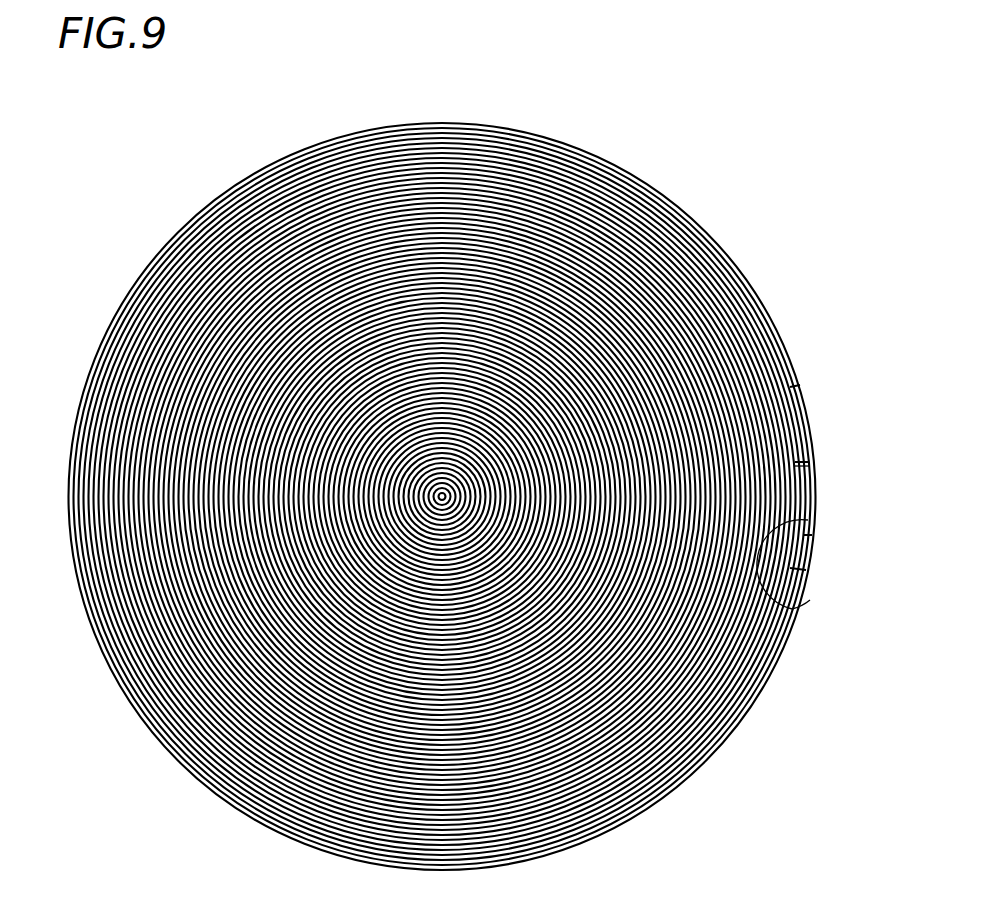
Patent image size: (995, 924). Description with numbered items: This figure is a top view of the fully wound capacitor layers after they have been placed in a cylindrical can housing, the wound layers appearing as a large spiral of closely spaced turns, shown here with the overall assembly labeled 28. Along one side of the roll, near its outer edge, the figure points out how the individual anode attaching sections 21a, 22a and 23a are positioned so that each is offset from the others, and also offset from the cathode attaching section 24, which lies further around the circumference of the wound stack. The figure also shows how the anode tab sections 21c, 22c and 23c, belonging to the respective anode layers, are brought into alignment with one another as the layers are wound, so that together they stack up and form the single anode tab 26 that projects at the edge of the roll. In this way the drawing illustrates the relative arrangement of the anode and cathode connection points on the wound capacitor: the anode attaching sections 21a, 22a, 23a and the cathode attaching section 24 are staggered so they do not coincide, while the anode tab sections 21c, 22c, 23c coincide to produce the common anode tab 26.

The optical disc 28 is at (497, 118).
The cathode attaching section 24 is at (717, 723).
The anode attaching section 23a is at (795, 388).
The anode tab section 22c is at (808, 464).
The anode attaching section 22a is at (853, 458).
The anode tab 26 is at (818, 505).
The anode tab section 23c is at (810, 530).
The anode attaching section 21a is at (792, 570).
The anode tab section 21c is at (796, 608).